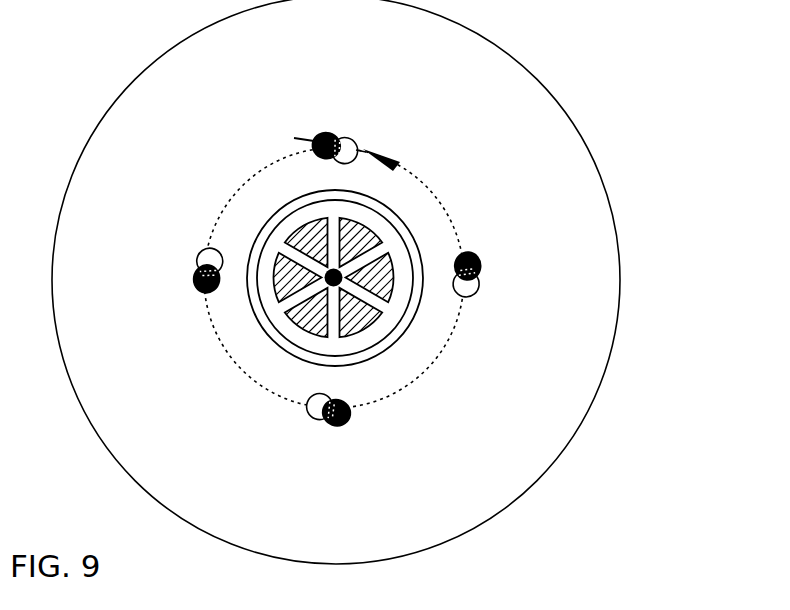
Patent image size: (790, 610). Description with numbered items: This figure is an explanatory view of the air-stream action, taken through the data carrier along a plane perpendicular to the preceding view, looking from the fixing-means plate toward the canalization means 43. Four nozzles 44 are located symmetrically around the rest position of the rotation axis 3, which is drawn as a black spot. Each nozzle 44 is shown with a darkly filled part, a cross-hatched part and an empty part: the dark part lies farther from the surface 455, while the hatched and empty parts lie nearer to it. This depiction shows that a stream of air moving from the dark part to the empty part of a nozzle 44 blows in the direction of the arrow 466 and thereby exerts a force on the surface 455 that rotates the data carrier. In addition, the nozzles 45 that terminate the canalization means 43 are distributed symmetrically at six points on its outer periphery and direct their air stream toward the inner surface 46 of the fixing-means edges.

The rotation axis 3 is at (338, 282).
The canalization means 43 is at (358, 263).
The nozzles 44 is at (162, 277).
The nozzles 45 is at (277, 277).
The inner surface 46 is at (263, 255).
The surface 455 is at (370, 282).
The arrow 466 is at (318, 113).